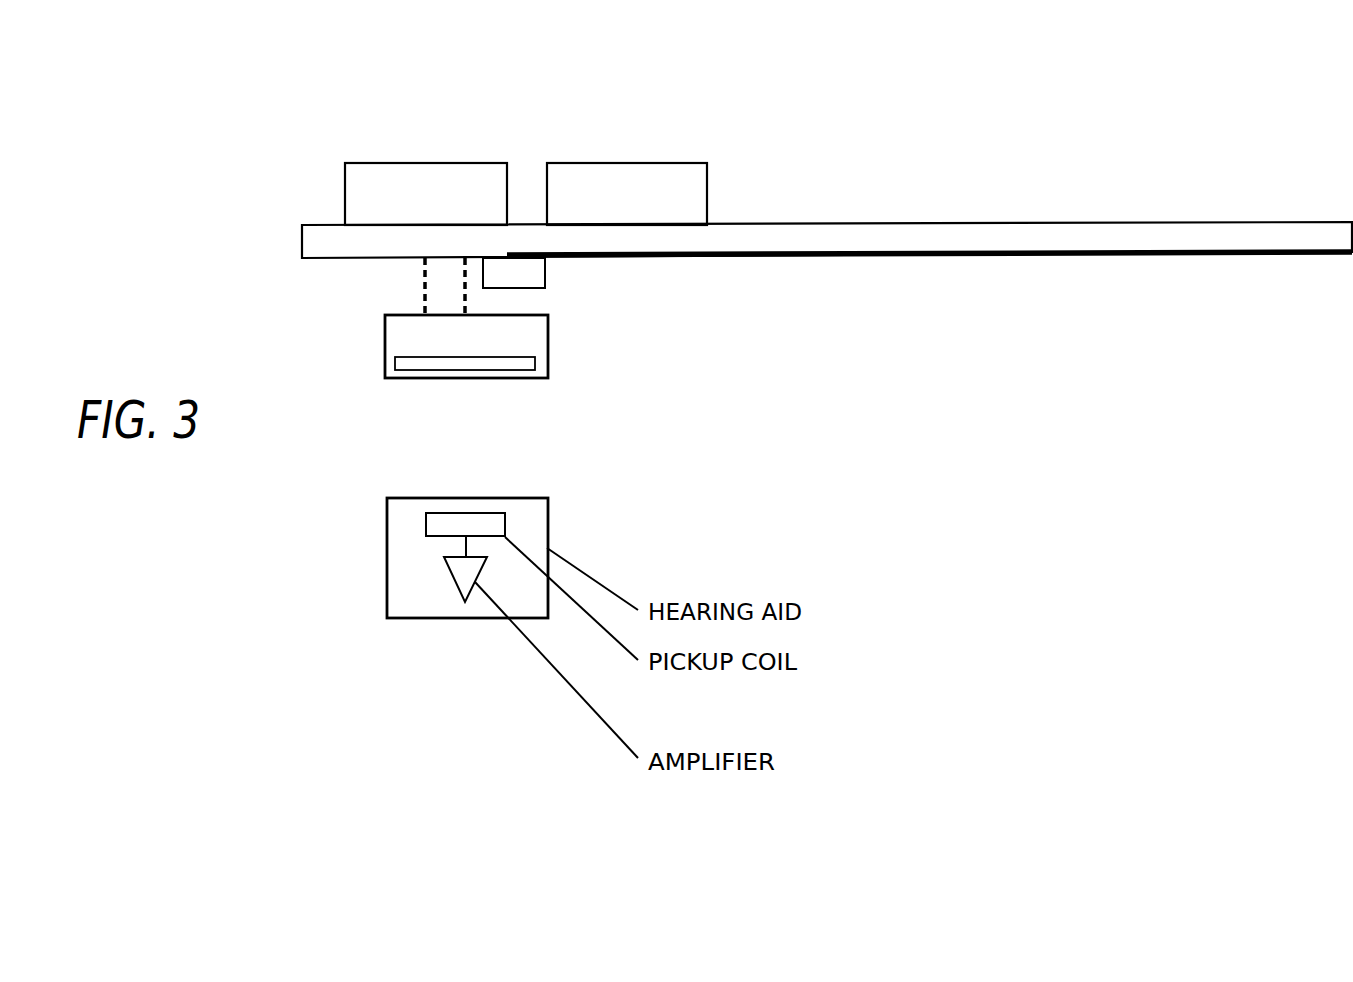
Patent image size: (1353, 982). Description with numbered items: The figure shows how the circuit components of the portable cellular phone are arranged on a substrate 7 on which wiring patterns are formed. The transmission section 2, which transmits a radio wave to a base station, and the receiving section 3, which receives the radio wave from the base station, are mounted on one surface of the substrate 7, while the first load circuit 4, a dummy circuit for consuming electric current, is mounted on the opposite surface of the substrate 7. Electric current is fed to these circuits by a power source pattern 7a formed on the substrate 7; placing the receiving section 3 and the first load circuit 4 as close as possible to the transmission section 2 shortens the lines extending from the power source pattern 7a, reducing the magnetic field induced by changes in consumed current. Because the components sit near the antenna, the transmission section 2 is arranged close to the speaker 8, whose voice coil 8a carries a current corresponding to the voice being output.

The transmission section 2 is at (433, 162).
The receiving section 3 is at (613, 162).
The first load circuit 4 is at (545, 273).
The substrate 7 is at (895, 222).
The power source pattern 7a is at (1018, 250).
The speaker 8 is at (548, 337).
The voice coil 8a is at (537, 362).